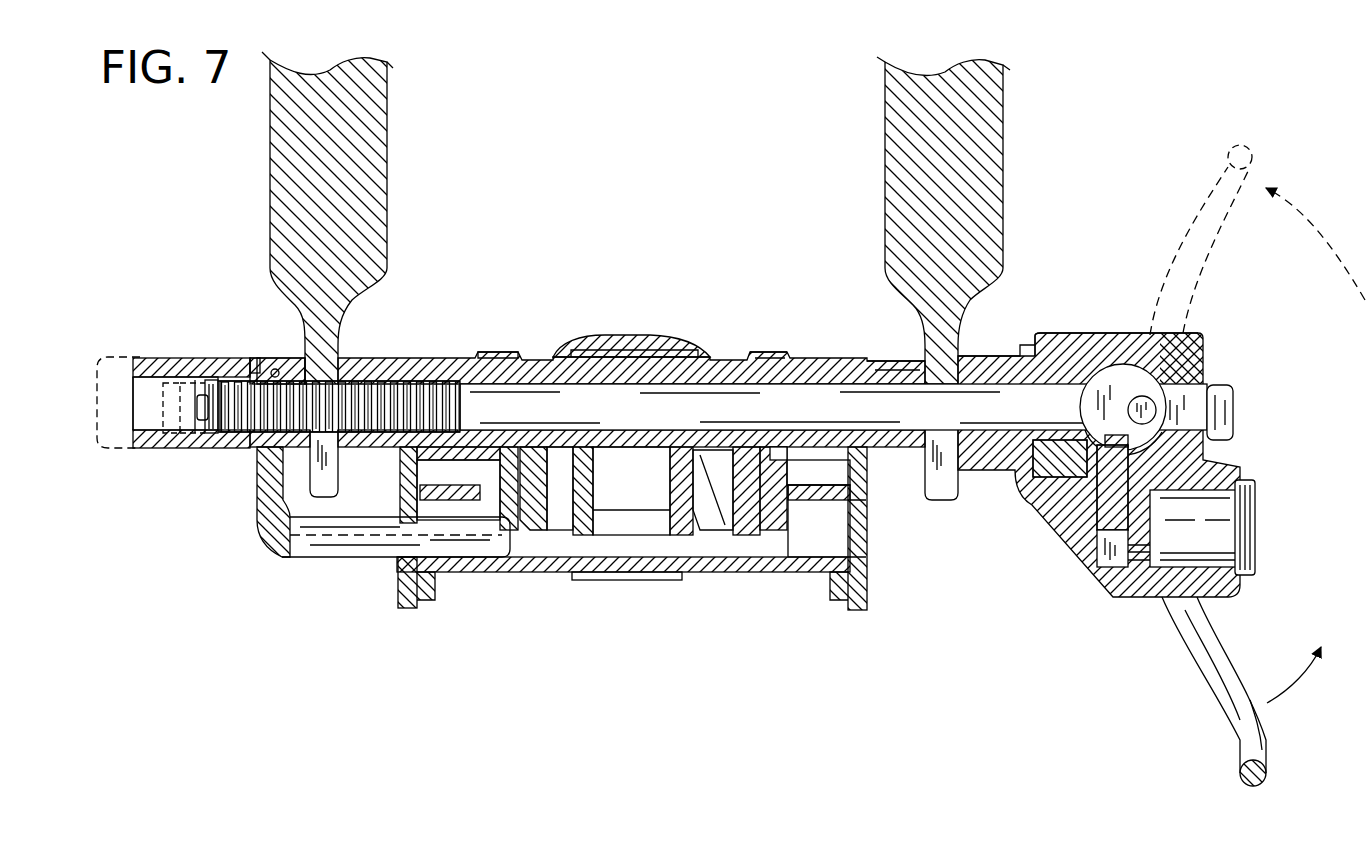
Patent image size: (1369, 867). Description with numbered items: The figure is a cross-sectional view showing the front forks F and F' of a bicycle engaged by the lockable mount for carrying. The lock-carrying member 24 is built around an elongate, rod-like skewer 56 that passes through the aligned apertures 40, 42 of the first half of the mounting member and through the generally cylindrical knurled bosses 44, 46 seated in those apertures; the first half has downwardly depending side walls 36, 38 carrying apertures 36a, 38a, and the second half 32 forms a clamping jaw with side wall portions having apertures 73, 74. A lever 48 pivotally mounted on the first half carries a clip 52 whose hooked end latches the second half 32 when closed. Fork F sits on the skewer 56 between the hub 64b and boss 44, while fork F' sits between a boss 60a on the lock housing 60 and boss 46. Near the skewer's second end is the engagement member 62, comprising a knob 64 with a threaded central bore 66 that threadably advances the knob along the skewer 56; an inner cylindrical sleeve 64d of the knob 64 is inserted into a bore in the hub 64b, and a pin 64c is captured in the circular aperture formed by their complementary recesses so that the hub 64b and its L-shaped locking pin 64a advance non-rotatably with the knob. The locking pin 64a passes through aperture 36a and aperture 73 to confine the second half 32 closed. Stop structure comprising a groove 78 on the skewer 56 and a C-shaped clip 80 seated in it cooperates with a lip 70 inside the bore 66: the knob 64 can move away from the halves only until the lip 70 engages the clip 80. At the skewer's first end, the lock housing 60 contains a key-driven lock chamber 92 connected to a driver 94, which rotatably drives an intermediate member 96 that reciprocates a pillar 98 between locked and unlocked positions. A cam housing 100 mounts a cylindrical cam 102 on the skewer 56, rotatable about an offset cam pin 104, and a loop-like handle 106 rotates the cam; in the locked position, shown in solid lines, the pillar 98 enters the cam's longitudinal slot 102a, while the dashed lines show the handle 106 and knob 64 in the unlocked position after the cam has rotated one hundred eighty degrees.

The lock-carrying member 24 is at (1207, 318).
The second half 32 is at (812, 572).
The side wall 36 is at (398, 585).
The aperture 36a is at (328, 560).
The side wall 38 is at (868, 582).
The aperture 38a is at (990, 566).
The aperture 40 is at (480, 358).
The aperture 42 is at (768, 368).
The boss 44 is at (366, 358).
The boss 46 is at (898, 365).
The lever 48 is at (614, 335).
The clip 52 is at (628, 581).
The skewer 56 is at (664, 395).
The lock housing 60 is at (1220, 590).
The boss 60a is at (1030, 320).
The engagement member 62 is at (150, 322).
The knob 64 is at (150, 357).
The locking pin 64a is at (308, 532).
The hub 64b is at (300, 380).
The pin 64c is at (292, 362).
The inner cylindrical sleeve 64d is at (258, 532).
The bore 66 is at (120, 403).
The lip 70 is at (216, 440).
The aperture 73 is at (400, 492).
The aperture 74 is at (812, 502).
The groove 78 is at (200, 410).
The clip 80 is at (204, 372).
The lock chamber 92 is at (1255, 527).
The driver 94 is at (1135, 575).
The intermediate member 96 is at (1100, 530).
The pillar 98 is at (1120, 460).
The cam housing 100 is at (1068, 333).
The cam 102 is at (1114, 375).
The slot 102a is at (1362, 482).
The cam pin 104 is at (1152, 402).
The handle 106 is at (1257, 745).
The fork F is at (351, 218).
The fork F' is at (972, 220).